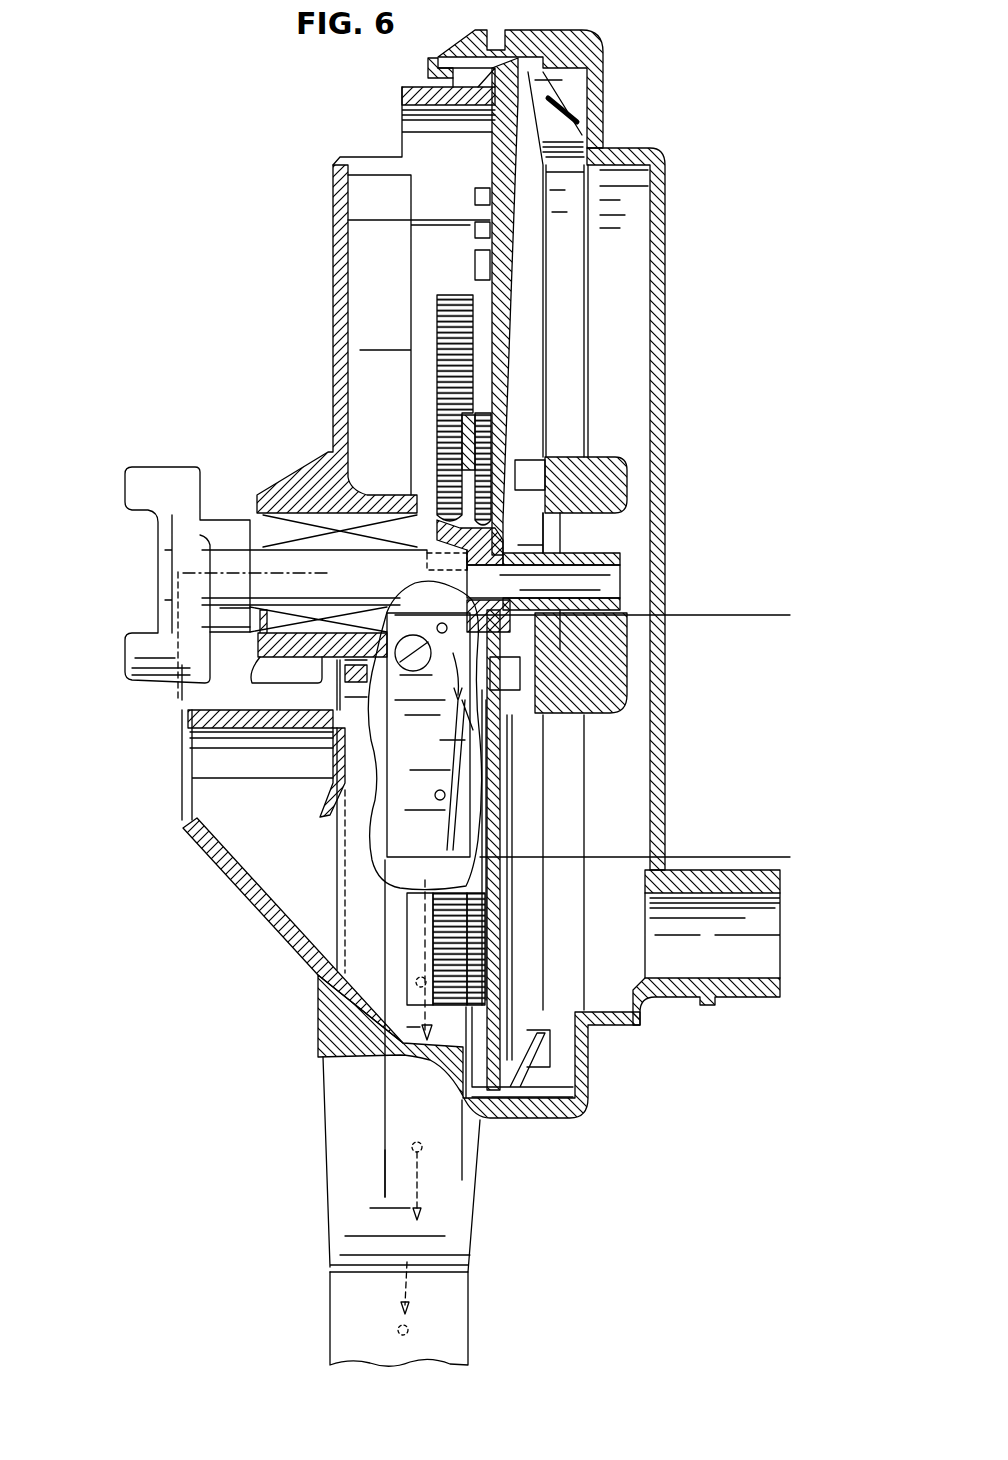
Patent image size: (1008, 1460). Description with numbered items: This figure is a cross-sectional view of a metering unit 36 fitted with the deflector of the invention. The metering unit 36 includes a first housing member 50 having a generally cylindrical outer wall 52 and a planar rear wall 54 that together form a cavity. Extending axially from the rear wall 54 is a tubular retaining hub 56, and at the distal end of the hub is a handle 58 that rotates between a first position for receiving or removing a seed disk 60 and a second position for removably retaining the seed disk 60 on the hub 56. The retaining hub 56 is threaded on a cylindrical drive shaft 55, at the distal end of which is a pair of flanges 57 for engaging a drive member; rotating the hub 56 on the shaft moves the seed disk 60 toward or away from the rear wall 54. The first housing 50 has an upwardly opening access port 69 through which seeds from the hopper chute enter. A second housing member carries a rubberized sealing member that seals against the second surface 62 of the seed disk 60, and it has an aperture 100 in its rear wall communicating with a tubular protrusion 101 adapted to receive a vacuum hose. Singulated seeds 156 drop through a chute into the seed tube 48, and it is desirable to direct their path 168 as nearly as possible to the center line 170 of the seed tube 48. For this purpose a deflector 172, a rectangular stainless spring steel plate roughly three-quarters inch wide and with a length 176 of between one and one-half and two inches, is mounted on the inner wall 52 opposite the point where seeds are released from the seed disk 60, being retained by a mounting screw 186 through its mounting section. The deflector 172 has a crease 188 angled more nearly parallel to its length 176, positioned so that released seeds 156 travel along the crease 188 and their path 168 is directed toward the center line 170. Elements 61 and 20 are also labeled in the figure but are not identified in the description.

The metering unit 36 is at (722, 97).
The cylindrical outer wall 52 is at (413, 100).
The planar rear wall 54 is at (372, 253).
The first housing member 50 is at (330, 310).
The splines 61 is at (490, 382).
The tubular retaining hub 56 is at (440, 522).
The flanges 57 is at (147, 462).
The handle 58 is at (635, 465).
The second surface 62 is at (560, 253).
The cylindrical drive shaft 55 is at (260, 682).
The access port 69 is at (200, 753).
The mounting screw 186 is at (397, 667).
The deflector 172 is at (383, 800).
The crease 188 is at (432, 822).
The path 168 is at (400, 1043).
The pipe 20 is at (320, 1095).
The seed tube 48 is at (330, 1310).
The seeds 156 is at (412, 1333).
The center line 170 is at (273, 1175).
The length 176 is at (770, 619).
The aperture 100 is at (745, 898).
The tubular protrusion 101 is at (755, 995).
The seed disk 60 is at (517, 943).